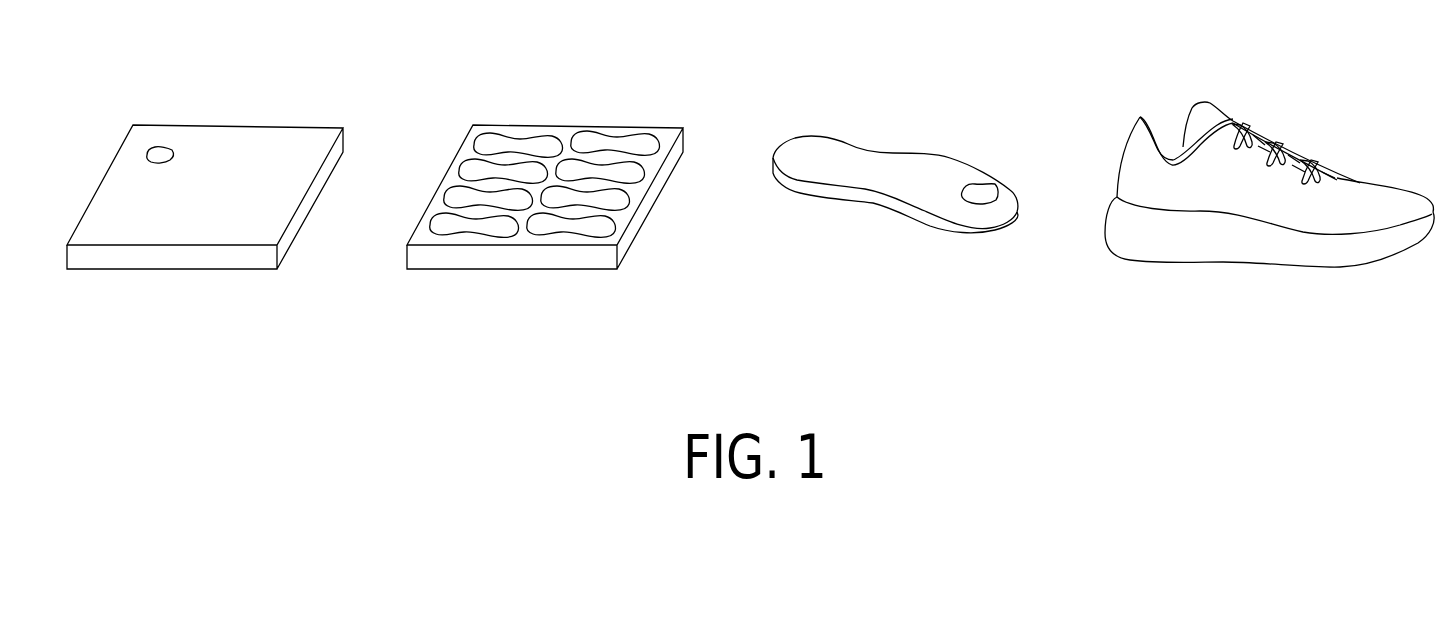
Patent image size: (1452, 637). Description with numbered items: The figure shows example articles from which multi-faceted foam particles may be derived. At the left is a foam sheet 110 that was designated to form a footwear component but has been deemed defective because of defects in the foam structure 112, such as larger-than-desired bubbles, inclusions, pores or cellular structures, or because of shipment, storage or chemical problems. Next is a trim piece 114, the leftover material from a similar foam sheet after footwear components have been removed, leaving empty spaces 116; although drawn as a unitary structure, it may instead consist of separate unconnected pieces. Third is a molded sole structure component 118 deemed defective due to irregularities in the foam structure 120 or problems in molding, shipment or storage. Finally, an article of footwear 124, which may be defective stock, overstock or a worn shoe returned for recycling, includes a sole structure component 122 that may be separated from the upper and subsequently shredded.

The foam sheet 110 is at (215, 320).
The defects in the foam structure 112 is at (160, 148).
The trim pieces 114 is at (552, 320).
The empty spaces 116 is at (586, 169).
The molded sole structure component 118 is at (922, 320).
The irregularities in the foam structure 120 is at (977, 190).
The sole structure component 122 is at (1287, 248).
The article of footwear 124 is at (1269, 194).